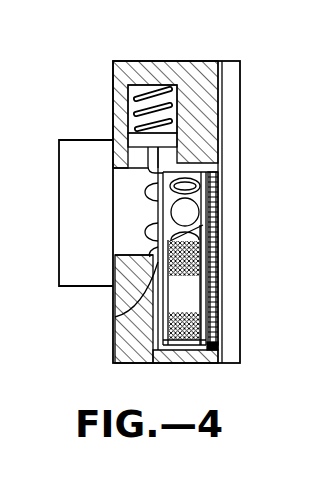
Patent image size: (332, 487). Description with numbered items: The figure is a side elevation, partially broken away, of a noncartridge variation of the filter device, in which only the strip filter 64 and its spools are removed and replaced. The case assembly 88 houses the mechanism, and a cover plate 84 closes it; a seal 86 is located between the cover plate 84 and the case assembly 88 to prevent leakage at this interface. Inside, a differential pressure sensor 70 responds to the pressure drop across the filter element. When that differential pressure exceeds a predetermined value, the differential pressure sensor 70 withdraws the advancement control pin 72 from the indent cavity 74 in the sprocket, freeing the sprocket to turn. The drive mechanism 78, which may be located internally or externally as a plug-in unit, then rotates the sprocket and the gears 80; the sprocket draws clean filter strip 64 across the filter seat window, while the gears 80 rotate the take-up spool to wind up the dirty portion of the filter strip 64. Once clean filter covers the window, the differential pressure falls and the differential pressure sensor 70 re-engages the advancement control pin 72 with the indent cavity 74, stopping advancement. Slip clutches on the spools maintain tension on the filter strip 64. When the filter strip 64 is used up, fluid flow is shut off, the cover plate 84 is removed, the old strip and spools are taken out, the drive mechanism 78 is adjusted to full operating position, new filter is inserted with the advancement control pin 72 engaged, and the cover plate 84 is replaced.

The strip filter 64 is at (190, 292).
The differential pressure sensor 70 is at (129, 97).
The advancement control pin 72 is at (175, 158).
The indent cavity 74 is at (150, 191).
The drive mechanism 78 is at (70, 262).
The gears 80 is at (215, 270).
The cover plate 84 is at (229, 167).
The seal 86 is at (226, 61).
The case assembly 88 is at (141, 61).